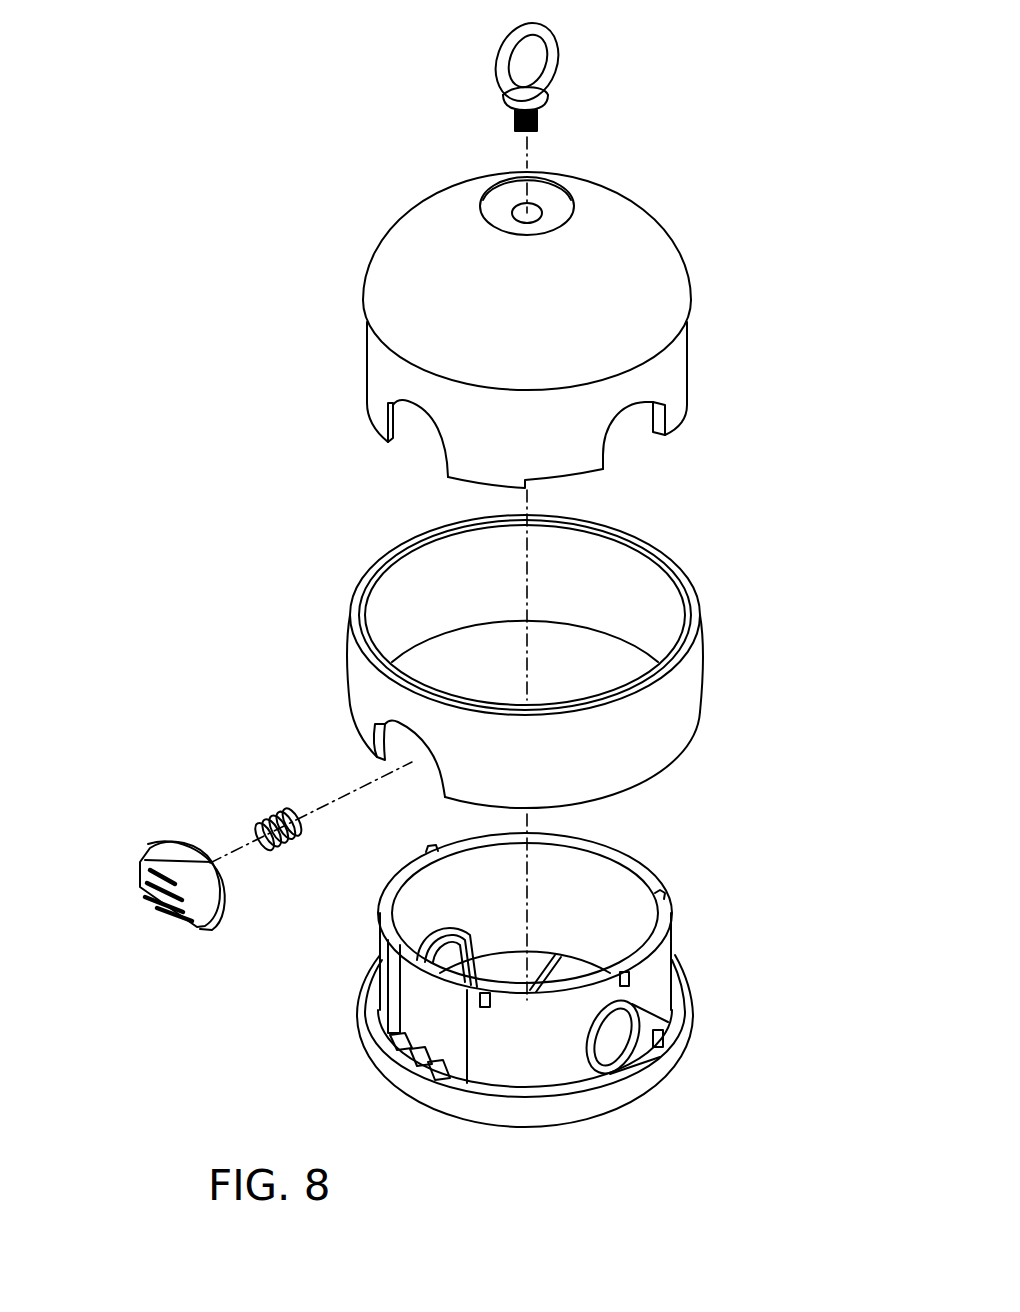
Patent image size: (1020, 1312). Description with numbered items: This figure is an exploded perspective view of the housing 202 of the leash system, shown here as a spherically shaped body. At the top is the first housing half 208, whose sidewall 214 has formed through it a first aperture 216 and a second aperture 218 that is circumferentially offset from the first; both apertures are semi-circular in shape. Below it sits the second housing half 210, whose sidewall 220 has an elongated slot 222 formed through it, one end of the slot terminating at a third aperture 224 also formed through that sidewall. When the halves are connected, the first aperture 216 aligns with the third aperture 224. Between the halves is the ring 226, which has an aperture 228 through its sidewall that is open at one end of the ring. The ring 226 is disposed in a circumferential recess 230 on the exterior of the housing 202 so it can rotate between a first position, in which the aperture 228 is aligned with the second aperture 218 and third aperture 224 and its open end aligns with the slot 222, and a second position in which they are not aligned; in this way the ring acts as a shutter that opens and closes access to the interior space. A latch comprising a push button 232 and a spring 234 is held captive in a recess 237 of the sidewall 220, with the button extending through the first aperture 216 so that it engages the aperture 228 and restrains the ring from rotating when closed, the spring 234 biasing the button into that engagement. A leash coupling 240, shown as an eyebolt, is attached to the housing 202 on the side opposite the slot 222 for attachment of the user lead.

The housing 202 is at (340, 200).
The first housing half 208 is at (660, 258).
The second housing half 210 is at (692, 993).
The sidewall 214 is at (672, 370).
The first aperture 216 is at (413, 430).
The second aperture 218 is at (638, 437).
The sidewall 220 is at (670, 950).
The elongated slot 222 is at (642, 1087).
The third aperture 224 is at (657, 1022).
The ring 226 is at (680, 668).
The aperture 228 is at (415, 770).
The circumferential recess 230 is at (512, 1030).
The push button 232 is at (152, 912).
The spring 234 is at (274, 808).
The recess 237 is at (410, 990).
The leash coupling 240 is at (560, 60).